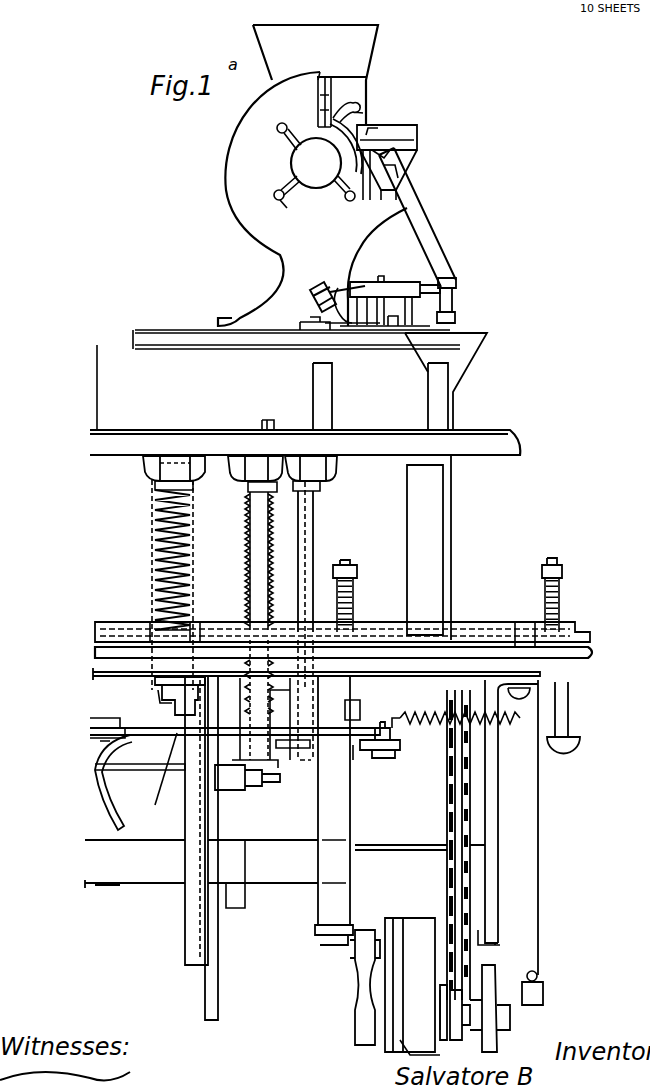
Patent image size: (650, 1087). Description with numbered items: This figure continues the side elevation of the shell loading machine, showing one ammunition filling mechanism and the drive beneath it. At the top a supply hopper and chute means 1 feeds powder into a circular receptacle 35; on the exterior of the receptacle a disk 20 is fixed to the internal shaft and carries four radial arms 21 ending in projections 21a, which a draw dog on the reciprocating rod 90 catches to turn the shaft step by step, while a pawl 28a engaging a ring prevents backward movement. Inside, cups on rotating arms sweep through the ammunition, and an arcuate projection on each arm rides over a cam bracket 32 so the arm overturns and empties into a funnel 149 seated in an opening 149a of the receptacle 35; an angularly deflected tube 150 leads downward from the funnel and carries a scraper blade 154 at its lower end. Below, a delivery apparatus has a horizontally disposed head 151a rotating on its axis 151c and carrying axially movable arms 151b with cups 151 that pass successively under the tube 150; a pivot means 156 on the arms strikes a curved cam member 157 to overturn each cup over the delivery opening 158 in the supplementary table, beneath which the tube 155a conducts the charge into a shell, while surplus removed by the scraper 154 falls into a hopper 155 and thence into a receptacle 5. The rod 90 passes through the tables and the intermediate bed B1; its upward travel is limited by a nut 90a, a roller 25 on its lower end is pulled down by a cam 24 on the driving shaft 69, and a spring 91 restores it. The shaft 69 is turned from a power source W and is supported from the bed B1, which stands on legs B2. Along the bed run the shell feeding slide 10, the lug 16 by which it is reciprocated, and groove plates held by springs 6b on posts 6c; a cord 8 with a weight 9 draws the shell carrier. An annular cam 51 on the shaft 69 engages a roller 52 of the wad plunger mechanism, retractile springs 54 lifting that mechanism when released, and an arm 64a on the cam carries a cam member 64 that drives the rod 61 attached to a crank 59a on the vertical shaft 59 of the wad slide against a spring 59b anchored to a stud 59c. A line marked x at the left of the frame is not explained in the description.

The supply hopper and chute means 1 is at (308, 35).
The pawl 28a is at (352, 113).
The receptacle 35 is at (243, 171).
The disk 20 is at (326, 153).
The radial arms 21 is at (373, 118).
The projections 21a is at (275, 200).
The funnel 149 is at (415, 136).
The opening 149a is at (400, 170).
The cam bracket 32 is at (400, 178).
The tube 150 is at (422, 236).
The scraper blade 154 is at (457, 283).
The cups 151 is at (456, 300).
The head 151a is at (400, 286).
The arms 151b is at (330, 290).
The axis 151c is at (322, 284).
The delivery opening 158 is at (320, 345).
The cam member 157 is at (355, 332).
The pivot means 156 is at (385, 333).
The frame line x is at (106, 386).
The hopper 155 is at (480, 348).
The tubes 155a is at (330, 400).
The reciprocating rod 90 is at (262, 423).
The stop or nut 90a is at (240, 476).
The retractile springs 54 is at (190, 520).
The spring 91 is at (298, 542).
The receptacle 5 is at (332, 530).
The vertical shaft 59 is at (302, 556).
The posts 6c is at (560, 568).
The springs 6b is at (562, 594).
The slide 10 is at (95, 626).
The intermediate bed B1 is at (95, 652).
The ear or lug 16 is at (93, 676).
The roller 52 is at (180, 700).
The arm 64a is at (160, 738).
The cam member 64 is at (100, 804).
The drawing rod 61 is at (153, 769).
The roller 25 is at (235, 782).
The annular cam 51 is at (200, 910).
The cam 24 is at (218, 968).
The driving shaft 69 is at (100, 885).
The crank 59a is at (378, 752).
The spring 59b is at (410, 712).
The pin or stud 59c is at (568, 706).
The cord 8 is at (540, 858).
The legs B2 is at (490, 808).
The weight 9 is at (540, 994).
The power source W is at (425, 1035).